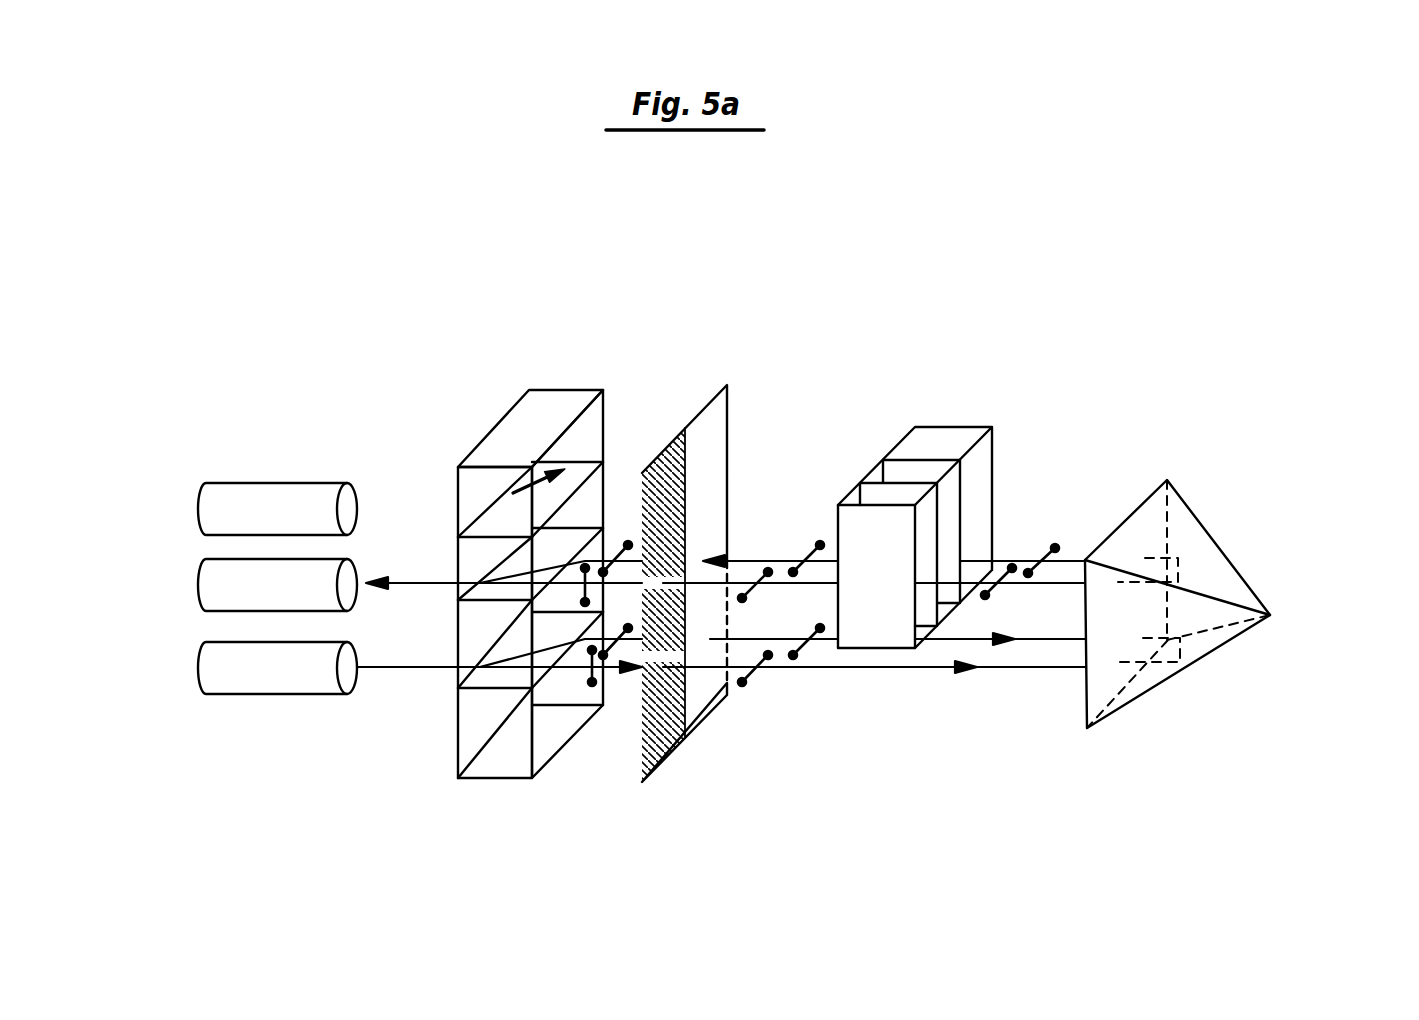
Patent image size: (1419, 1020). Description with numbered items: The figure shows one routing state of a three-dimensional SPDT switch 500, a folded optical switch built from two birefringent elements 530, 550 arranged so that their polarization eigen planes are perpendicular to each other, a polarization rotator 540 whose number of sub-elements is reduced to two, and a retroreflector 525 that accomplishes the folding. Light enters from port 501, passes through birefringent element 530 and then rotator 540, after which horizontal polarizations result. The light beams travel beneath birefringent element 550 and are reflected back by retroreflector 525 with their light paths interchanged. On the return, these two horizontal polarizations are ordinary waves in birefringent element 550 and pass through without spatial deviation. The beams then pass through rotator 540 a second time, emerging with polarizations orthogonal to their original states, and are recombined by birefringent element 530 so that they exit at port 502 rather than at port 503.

The three-dimensional SPDT switch 500 is at (1045, 417).
The port 501 is at (198, 667).
The port 502 is at (197, 586).
The port 503 is at (225, 483).
The retroreflector 525 is at (1247, 478).
The birefringent element 530 is at (549, 390).
The polarization rotator 540 is at (713, 400).
The birefringent element 550 is at (947, 427).